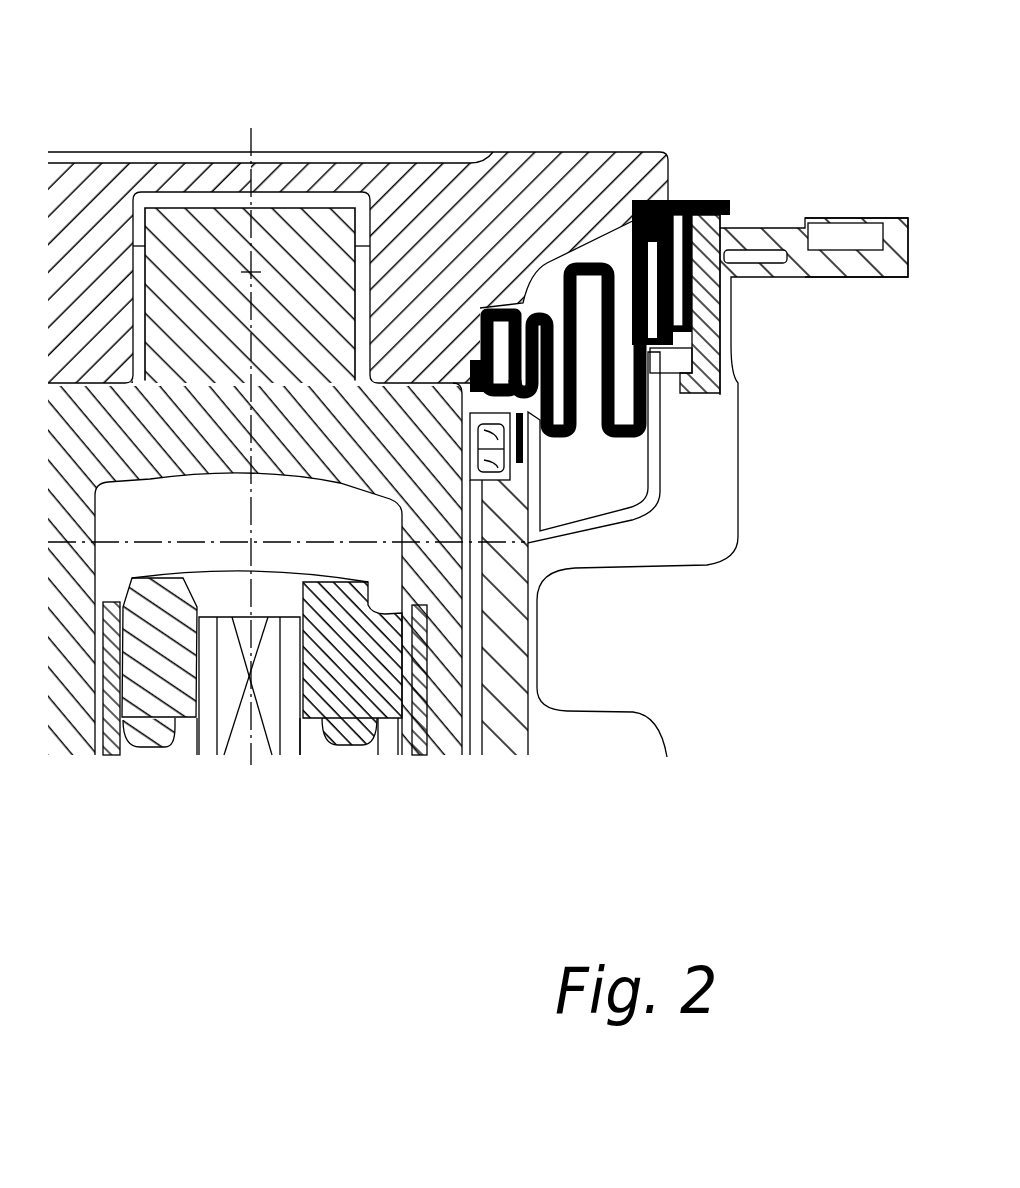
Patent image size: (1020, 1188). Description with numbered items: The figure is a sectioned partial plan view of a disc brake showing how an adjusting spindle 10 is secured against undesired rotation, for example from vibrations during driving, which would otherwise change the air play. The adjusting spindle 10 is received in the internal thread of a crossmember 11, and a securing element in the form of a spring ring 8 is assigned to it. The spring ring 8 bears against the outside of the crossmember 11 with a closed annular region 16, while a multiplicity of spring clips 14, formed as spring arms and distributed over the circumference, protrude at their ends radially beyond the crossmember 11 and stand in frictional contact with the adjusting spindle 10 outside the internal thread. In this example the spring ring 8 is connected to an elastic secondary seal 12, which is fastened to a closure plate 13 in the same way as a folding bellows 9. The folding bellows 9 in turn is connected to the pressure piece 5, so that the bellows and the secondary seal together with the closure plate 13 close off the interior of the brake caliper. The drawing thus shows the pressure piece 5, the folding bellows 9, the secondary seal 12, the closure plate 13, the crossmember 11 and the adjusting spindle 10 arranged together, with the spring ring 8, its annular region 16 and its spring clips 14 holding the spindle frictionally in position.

The pressure piece 5 is at (562, 215).
The spring ring 8 is at (548, 505).
The folding bellows 9 is at (652, 205).
The adjusting spindle 10 is at (450, 673).
The crossmember 11 is at (507, 697).
The elastic secondary seal 12 is at (653, 431).
The closure plate 13 is at (848, 265).
The spring clips 14 is at (467, 455).
The closed annular region 16 is at (508, 555).